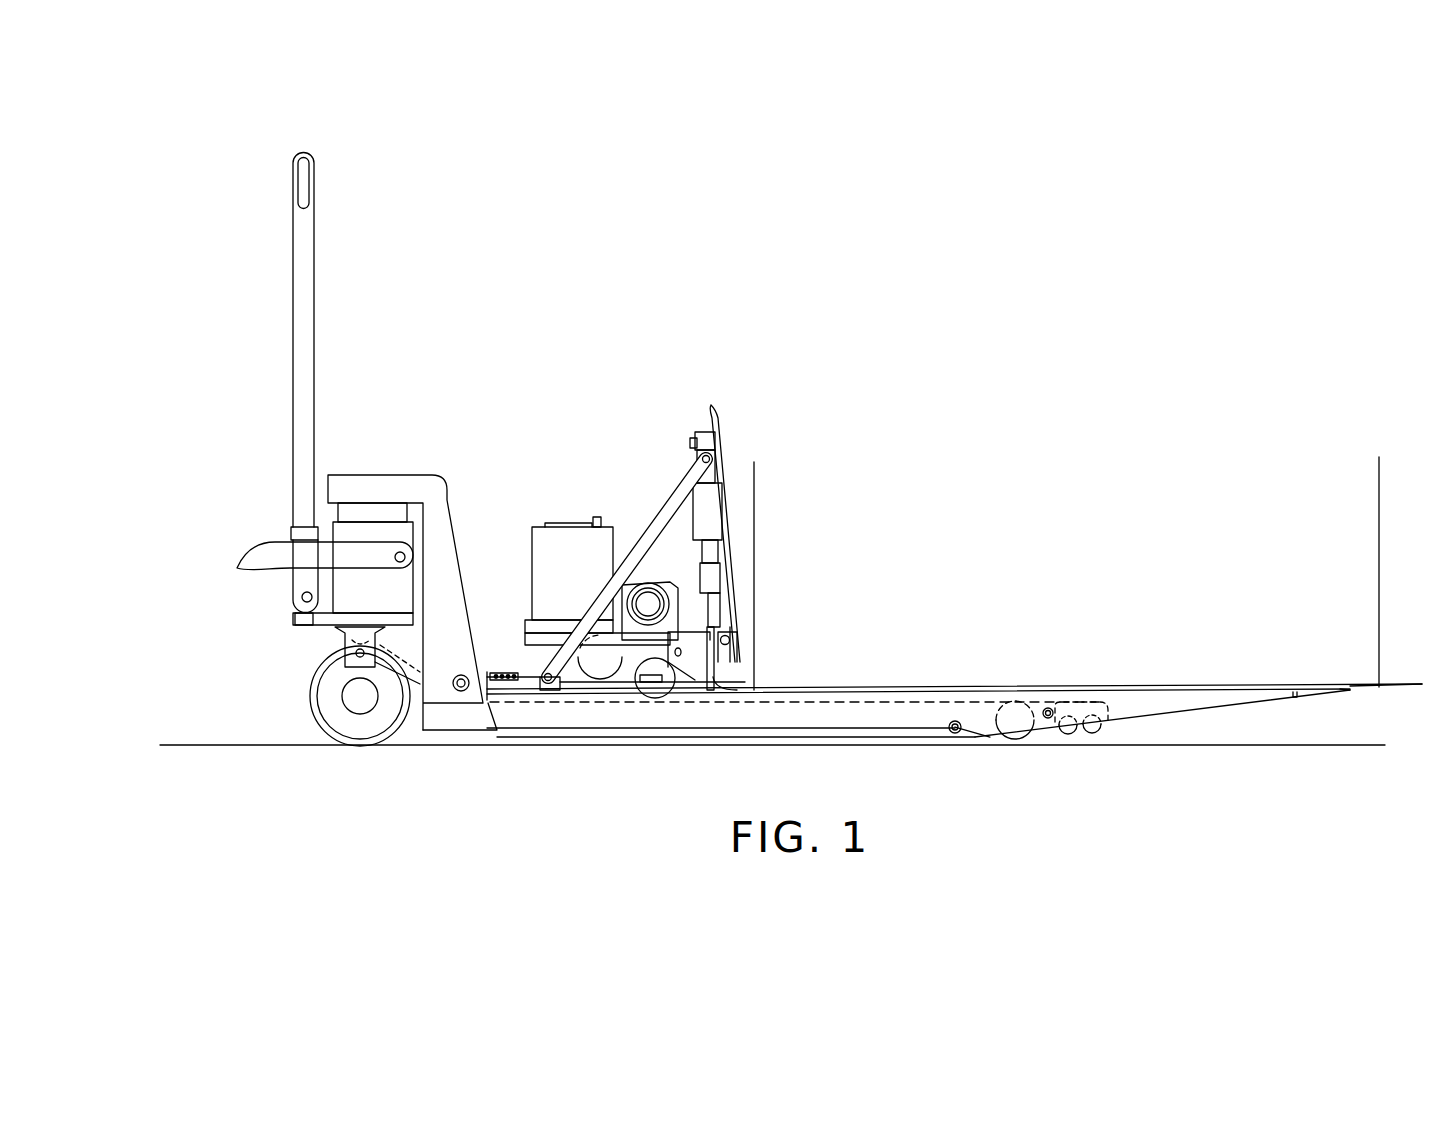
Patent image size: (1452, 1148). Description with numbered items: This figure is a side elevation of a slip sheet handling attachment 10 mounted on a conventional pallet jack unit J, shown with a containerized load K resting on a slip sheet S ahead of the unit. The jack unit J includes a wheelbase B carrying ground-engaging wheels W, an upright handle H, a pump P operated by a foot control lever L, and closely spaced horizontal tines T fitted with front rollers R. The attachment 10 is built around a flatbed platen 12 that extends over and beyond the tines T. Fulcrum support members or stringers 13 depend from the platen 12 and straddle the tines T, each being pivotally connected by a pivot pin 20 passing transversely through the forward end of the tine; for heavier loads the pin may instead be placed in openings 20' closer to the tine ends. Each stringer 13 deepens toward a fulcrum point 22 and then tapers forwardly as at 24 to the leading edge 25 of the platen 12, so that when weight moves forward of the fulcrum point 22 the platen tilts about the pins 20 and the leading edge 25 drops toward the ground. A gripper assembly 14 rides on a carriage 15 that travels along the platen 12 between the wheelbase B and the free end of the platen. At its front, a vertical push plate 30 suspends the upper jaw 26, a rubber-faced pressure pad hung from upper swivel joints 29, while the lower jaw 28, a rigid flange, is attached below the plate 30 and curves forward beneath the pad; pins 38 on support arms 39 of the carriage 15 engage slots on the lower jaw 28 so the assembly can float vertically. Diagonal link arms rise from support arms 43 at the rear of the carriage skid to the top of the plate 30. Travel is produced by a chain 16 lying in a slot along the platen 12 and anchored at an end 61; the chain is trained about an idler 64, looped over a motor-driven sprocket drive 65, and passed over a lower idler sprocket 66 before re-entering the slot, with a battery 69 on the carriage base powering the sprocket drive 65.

The handle H is at (293, 296).
The jack unit J is at (275, 397).
The foot control lever L is at (245, 545).
The pump P is at (300, 597).
The wheelbase B is at (298, 625).
The ground-engaging wheels W is at (310, 708).
The slip sheet handling attachment 10 is at (535, 450).
The gripper assembly 14 is at (692, 440).
The push plate 30 is at (725, 457).
The battery 69 is at (540, 540).
The sprocket drive 65 is at (657, 585).
The idler 64 is at (590, 630).
The chain anchor end 61 is at (508, 672).
The upper swivel joints 29 is at (722, 630).
The upper jaw 26 is at (733, 637).
The pins 38 is at (687, 652).
The lower jaw 28 is at (742, 683).
The support arms 43 is at (533, 685).
The chain drive 16 is at (580, 680).
The carriage 15 is at (647, 686).
The lower idler sprocket 66 is at (683, 668).
The support arms 39 is at (680, 663).
The platen 12 is at (835, 705).
The tines T is at (925, 695).
The pivot pin 20 is at (944, 758).
The fulcrum point 22 is at (975, 738).
The fulcrum support members 13 is at (1000, 740).
The openings 20' is at (1058, 668).
The front rollers R is at (1045, 743).
The forward taper 24 is at (1175, 713).
The leading edge 25 is at (1350, 688).
The containerized load K is at (1370, 535).
The slip sheet S is at (1397, 687).